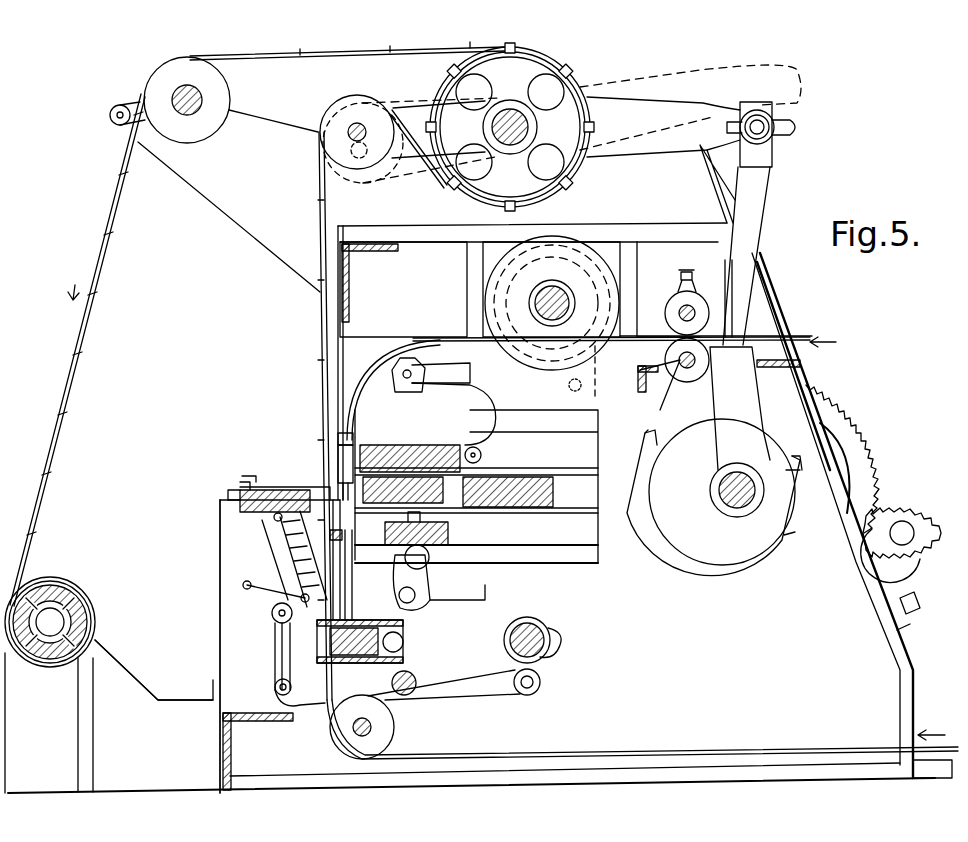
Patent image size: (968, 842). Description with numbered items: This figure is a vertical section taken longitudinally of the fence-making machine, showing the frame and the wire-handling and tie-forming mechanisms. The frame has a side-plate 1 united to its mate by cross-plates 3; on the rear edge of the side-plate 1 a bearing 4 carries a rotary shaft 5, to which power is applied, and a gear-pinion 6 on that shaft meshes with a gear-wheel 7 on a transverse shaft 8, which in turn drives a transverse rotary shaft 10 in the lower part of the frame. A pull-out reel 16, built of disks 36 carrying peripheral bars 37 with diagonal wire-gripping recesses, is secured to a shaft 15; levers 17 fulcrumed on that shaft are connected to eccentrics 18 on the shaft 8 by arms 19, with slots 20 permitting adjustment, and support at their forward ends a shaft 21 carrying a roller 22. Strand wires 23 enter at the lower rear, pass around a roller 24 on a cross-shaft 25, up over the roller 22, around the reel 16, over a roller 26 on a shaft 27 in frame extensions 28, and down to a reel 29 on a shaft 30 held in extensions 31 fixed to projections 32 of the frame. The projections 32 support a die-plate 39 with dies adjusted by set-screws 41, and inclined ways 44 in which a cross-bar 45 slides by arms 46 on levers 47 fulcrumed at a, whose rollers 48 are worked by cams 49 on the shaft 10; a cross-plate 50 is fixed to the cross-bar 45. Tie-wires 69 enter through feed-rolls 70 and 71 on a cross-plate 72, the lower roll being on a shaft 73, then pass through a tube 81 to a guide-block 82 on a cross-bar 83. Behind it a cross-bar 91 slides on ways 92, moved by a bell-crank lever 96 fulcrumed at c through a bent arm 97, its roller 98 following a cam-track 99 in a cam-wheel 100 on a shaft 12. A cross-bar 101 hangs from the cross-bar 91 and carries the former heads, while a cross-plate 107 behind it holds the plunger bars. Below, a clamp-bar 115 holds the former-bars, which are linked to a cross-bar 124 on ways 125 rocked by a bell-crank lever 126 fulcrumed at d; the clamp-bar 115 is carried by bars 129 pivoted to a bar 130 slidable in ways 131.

The side-plate 1 is at (847, 310).
The cross-plates 3 is at (350, 268).
The bearing 4 is at (900, 578).
The rotary shaft 5 is at (908, 528).
The gear-pinion 6 is at (905, 500).
The gear-wheel 7 is at (850, 432).
The shaft 8 is at (745, 505).
The transverse rotary shaft 10 is at (540, 630).
The shaft 12 is at (575, 292).
The shaft 15 is at (510, 108).
The pull-out reel 16 is at (578, 84).
The levers 17 is at (663, 160).
The eccentrics 18 is at (724, 550).
The arms 19 is at (752, 243).
The slots 20 is at (790, 125).
The shaft 21 is at (357, 122).
The roller 22 is at (382, 112).
The strand wires 23 is at (85, 365).
The roller 24 is at (395, 732).
The cross-shaft 25 is at (355, 733).
The roller 26 is at (228, 80).
The shaft 27 is at (205, 108).
The frame extensions 28 is at (214, 200).
The reel 29 is at (92, 604).
The shaft 30 is at (68, 622).
The extensions 31 is at (122, 692).
The projections 32 is at (220, 556).
The disks 36 is at (530, 64).
The bars 37 is at (500, 48).
The die-plate 39 is at (280, 488).
The set-screws 41 is at (236, 490).
The inclined ways 44 is at (280, 542).
The cross-bar 45 is at (272, 604).
The arms 46 is at (272, 654).
The levers 47 is at (478, 700).
The rollers 48 is at (542, 682).
The cams 49 is at (560, 640).
The cross-plate 50 is at (276, 520).
The wires 69 is at (800, 332).
The lower feed-roll 70 is at (708, 371).
The feed-roll 71 is at (698, 306).
The cross-plate 72 is at (804, 365).
The shaft 73 is at (680, 370).
The tube 81 is at (448, 336).
The guide-block 82 is at (340, 438).
The cross-bar 83 is at (345, 460).
The cross-bar 91 is at (485, 462).
The ways 92 is at (575, 466).
The bell-crank lever 96 is at (430, 352).
The bent arm 97 is at (590, 418).
The roller 98 is at (596, 388).
The cam-track 99 is at (590, 368).
The cam-wheel 100 is at (558, 250).
The cross-bar 101 is at (440, 505).
The cross-plate 107 is at (540, 508).
The clamp-bar 115 is at (348, 555).
The cross-bar 124 is at (450, 537).
The ways 125 is at (575, 553).
The bell-crank lever 126 is at (488, 596).
The bars 129 is at (348, 594).
The bar 130 is at (358, 660).
The ways 131 is at (275, 680).
The fulcrum a is at (412, 676).
The fulcrum c is at (407, 372).
The fulcrum d is at (415, 594).